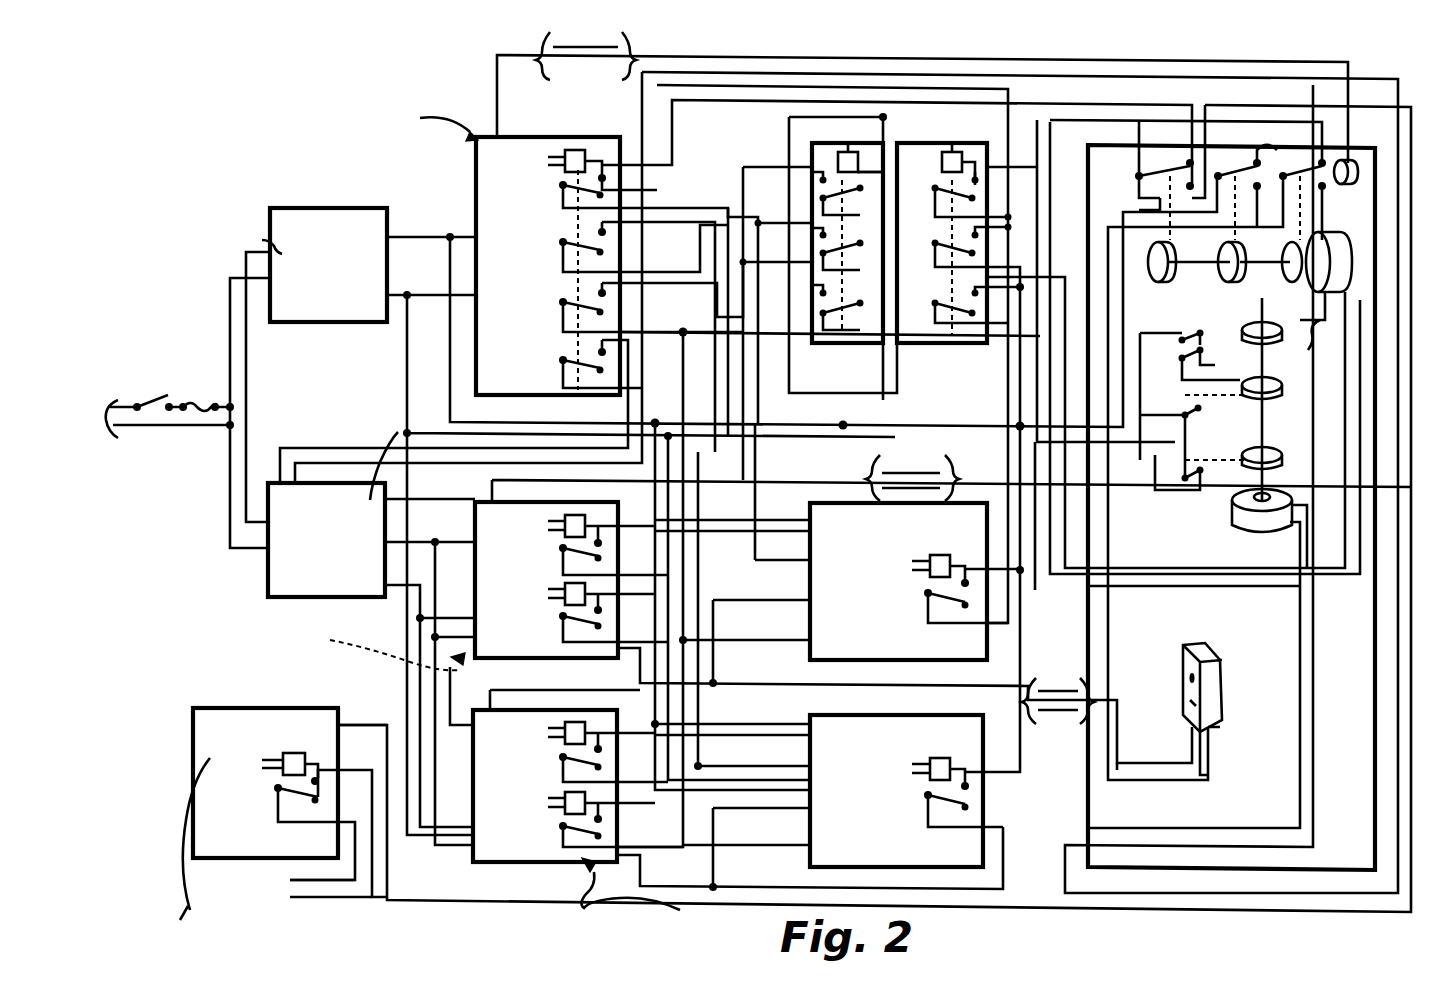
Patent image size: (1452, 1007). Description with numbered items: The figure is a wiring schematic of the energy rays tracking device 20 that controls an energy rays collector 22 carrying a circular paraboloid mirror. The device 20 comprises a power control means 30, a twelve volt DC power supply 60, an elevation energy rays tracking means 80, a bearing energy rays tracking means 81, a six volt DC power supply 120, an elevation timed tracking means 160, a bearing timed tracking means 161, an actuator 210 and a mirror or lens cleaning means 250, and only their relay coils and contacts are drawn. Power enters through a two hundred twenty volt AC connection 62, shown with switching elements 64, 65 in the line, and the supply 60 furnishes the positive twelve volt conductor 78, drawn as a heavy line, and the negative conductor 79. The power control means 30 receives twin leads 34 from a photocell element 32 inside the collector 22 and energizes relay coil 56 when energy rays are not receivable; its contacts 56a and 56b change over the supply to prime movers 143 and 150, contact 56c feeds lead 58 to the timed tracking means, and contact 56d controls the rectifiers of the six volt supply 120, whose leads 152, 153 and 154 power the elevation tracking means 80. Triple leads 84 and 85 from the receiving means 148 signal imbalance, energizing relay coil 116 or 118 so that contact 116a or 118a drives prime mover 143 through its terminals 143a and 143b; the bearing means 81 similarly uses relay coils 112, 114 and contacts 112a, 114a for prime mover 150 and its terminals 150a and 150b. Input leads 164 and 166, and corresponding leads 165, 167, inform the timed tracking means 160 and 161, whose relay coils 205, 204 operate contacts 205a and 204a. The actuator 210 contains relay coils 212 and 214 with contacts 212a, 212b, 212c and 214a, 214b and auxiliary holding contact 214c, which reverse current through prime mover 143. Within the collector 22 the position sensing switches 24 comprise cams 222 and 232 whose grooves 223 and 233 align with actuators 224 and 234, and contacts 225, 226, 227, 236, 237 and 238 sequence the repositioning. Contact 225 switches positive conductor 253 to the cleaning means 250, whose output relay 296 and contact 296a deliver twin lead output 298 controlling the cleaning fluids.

The energy rays tracking device 20 is at (1048, 915).
The energy rays collector 22 is at (1082, 873).
The position sensing switches 24 is at (1302, 362).
The power control means 30 is at (512, 257).
The energy rays sensitive element 32 is at (1362, 190).
The twin leads 34 is at (624, 80).
The relay coil 56 is at (542, 168).
The contact 56a is at (556, 198).
The contact 56b is at (556, 252).
The contact 56c is at (556, 315).
The contact 56d is at (556, 372).
The negative 12 volt DC conductor 58 is at (658, 312).
The 12 volt DC power supply 60 is at (308, 208).
The AC power connection 62 is at (170, 428).
The switch 64 is at (146, 396).
The fuse 65 is at (188, 398).
The positive 12 volt DC conductor 78 is at (448, 276).
The negative 12 volt DC conductor 79 is at (410, 344).
The elevation energy rays tracking means 80 is at (661, 632).
The bearing energy rays tracking means 81 is at (590, 833).
The triple lead input 84 is at (1215, 745).
The triple lead 85 is at (1130, 733).
The relay coil 112 is at (535, 744).
The contact 112a is at (556, 772).
The relay coil 114 is at (535, 812).
The contact 114a is at (556, 842).
The relay coil 116 is at (535, 533).
The contact 116a is at (556, 562).
The relay coil 118 is at (535, 602).
The contact 118a is at (556, 630).
The 6 volt DC power supply 120 is at (269, 569).
The prime mover 143 is at (1342, 230).
The prime mover terminal 143a is at (1268, 323).
The prime mover terminal 143b is at (1310, 338).
The receiving means 148 is at (1222, 688).
The prime mover 150 is at (1231, 520).
The prime mover terminal 150a is at (1300, 540).
The prime mover terminal 150b is at (1300, 488).
The 6 volt DC power supply lead 152 is at (452, 502).
The 6 volt DC power supply lead 153 is at (448, 544).
The 6 volt DC power supply lead 154 is at (410, 606).
The elevation timed tracking means 160 is at (810, 660).
The bearing timed tracking means 161 is at (804, 712).
The input lead 164 is at (799, 558).
The conductor 165 is at (799, 764).
The input lead 166 is at (799, 602).
The conductor 167 is at (799, 808).
The relay coil 204 is at (904, 778).
The contact 204a is at (918, 810).
The relay coil 205 is at (904, 573).
The contact 205a is at (918, 606).
The actuator 210 is at (852, 267).
The relay coil 212 is at (948, 125).
The contact 212a is at (990, 182).
The contact 212b is at (990, 246).
The contact 212c is at (930, 345).
The relay coil 214 is at (858, 131).
The contact 214a is at (840, 190).
The contact 214b is at (840, 243).
The auxiliary holding contact 214c is at (867, 345).
The cam 222 is at (1240, 294).
The groove 223 is at (1172, 286).
The position sensing actuator 224 is at (1140, 210).
The contact 225 is at (1142, 173).
The contact 226 is at (1250, 140).
The contact 227 is at (1272, 130).
The cam 232 is at (1275, 442).
The groove 233 is at (1282, 410).
The position sensing actuator 234 is at (1237, 440).
The contact 236 is at (1152, 483).
The contact 237 is at (1167, 364).
The contact 238 is at (1167, 336).
The mirror or lens cleaning means 250 is at (244, 708).
The positive 12 volt DC conductor 253 is at (430, 905).
The output relay 296 is at (260, 764).
The relay contact 296a is at (274, 810).
The twin lead output 298 is at (292, 882).